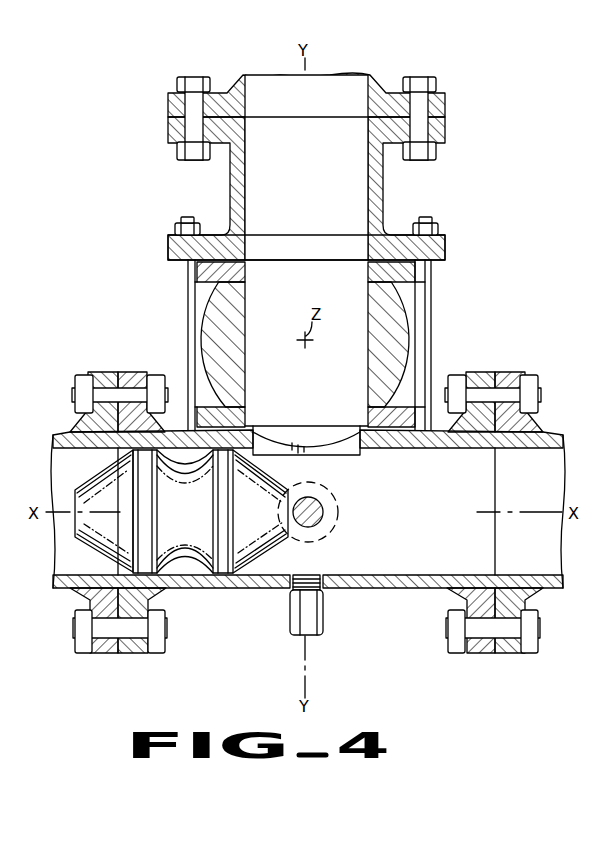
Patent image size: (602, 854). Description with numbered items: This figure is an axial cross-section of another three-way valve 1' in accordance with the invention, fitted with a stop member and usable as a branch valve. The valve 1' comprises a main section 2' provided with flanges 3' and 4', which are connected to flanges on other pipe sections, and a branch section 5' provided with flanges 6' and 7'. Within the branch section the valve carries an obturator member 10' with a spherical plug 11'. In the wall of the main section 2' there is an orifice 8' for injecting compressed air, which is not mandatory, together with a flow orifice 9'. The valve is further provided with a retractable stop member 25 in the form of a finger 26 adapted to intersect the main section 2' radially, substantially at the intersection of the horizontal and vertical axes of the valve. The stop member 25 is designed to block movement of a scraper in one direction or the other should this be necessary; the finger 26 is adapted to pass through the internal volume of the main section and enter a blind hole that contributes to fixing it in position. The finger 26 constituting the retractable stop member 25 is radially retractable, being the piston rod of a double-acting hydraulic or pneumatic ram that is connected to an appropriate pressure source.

The valve 1' is at (308, 364).
The main section 2' is at (308, 512).
The flange 3' is at (120, 530).
The flange 4' is at (489, 535).
The branch section 5' is at (311, 166).
The flange 6' is at (337, 118).
The flange 7' is at (326, 240).
The orifice 8' is at (274, 605).
The flow orifice 9' is at (305, 367).
The obturator member 10' is at (354, 345).
The spherical plug 11' is at (347, 344).
The retractable stop member 25 is at (328, 492).
The finger 26 is at (326, 512).